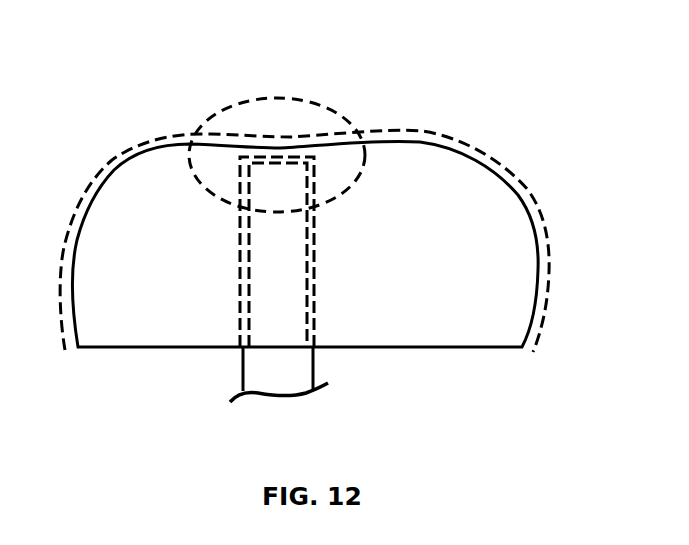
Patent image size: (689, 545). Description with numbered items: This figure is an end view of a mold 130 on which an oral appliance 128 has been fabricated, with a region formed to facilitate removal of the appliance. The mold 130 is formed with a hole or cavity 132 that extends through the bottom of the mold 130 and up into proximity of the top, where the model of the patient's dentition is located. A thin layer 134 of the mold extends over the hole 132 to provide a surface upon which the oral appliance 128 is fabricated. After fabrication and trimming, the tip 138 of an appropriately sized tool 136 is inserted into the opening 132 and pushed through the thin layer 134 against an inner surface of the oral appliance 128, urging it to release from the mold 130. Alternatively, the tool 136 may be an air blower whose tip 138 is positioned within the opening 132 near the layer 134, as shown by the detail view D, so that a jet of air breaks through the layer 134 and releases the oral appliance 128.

The oral appliance 128 is at (527, 187).
The mold 130 is at (103, 200).
The hole or cavity 132 is at (317, 253).
The thin layer 134 is at (285, 148).
The tool 136 is at (241, 317).
The tip 138 is at (265, 162).
The detail view D is at (256, 99).